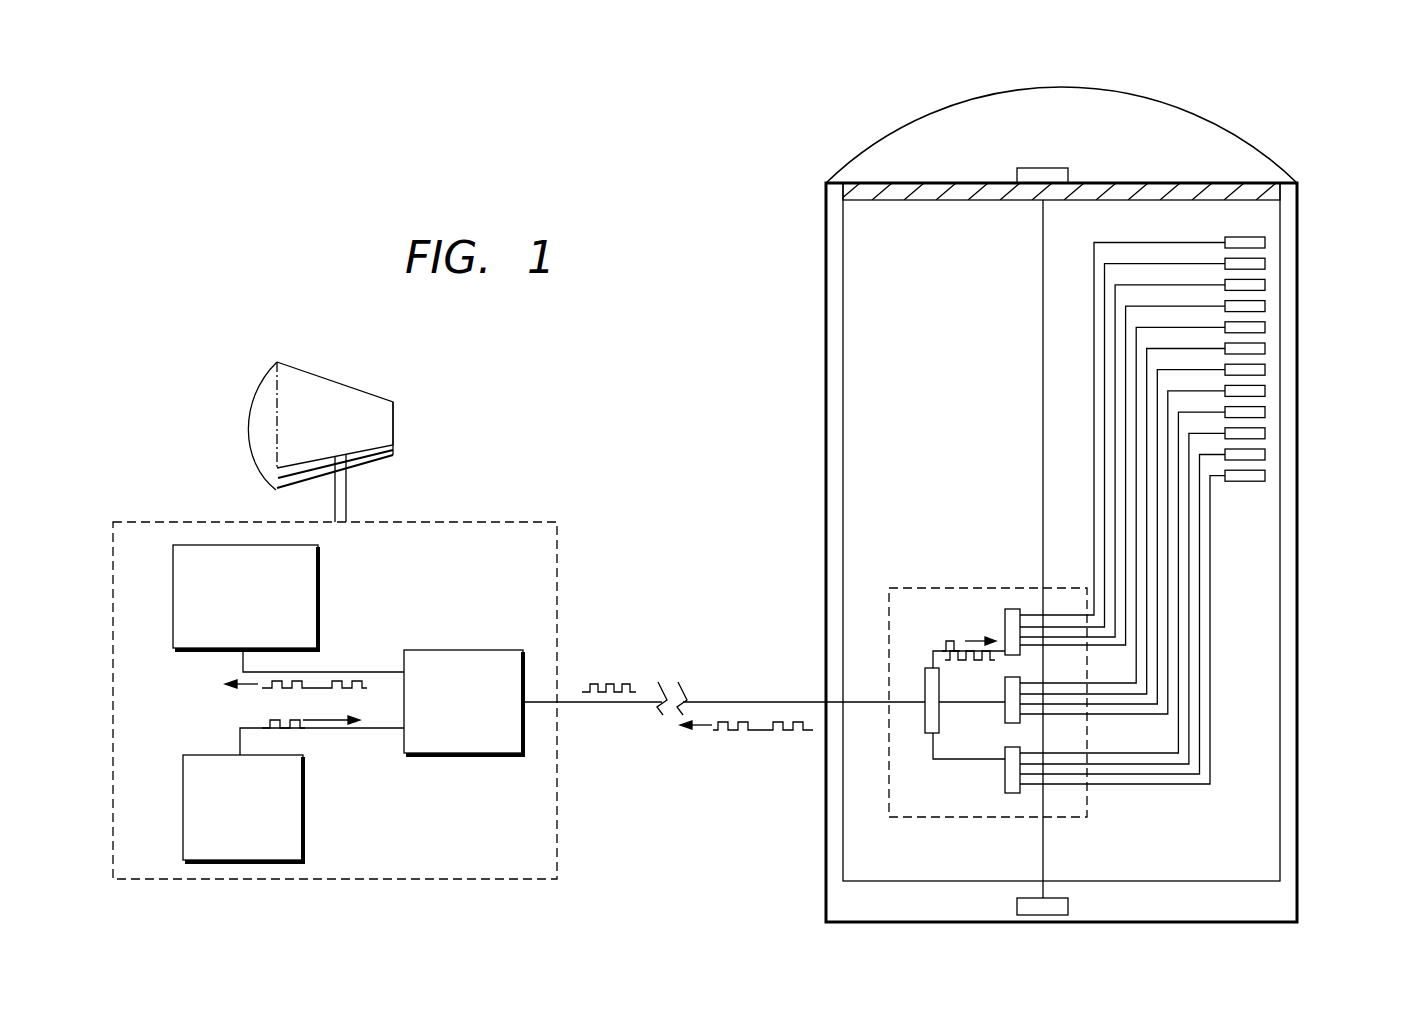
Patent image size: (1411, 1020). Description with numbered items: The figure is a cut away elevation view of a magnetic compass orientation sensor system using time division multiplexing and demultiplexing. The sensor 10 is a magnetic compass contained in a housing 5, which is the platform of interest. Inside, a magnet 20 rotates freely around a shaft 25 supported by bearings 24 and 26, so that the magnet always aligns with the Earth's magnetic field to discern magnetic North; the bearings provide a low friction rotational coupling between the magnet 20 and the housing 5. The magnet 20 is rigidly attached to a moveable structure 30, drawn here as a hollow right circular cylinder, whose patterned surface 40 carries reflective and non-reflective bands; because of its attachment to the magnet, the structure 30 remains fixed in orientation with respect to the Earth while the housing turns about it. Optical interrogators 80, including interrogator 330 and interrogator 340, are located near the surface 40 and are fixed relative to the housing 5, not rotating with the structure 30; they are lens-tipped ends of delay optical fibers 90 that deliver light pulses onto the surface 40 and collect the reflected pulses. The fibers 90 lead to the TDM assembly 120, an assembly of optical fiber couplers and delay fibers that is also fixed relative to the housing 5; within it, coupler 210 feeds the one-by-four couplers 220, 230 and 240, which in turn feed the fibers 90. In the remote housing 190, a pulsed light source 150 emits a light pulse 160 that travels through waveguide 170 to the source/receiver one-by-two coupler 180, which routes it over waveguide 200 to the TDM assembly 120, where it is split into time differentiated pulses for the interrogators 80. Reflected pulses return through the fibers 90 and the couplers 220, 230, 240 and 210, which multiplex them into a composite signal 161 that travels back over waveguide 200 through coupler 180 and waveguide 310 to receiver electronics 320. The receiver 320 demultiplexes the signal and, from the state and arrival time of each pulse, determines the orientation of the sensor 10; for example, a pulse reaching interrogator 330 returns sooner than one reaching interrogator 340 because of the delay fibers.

The housing 5 is at (820, 372).
The sensor 10 is at (1148, 97).
The magnet 20 is at (1200, 182).
The bearing 24 is at (1033, 167).
The shaft 25 is at (1043, 310).
The bearing 26 is at (1068, 907).
The moveable structure 30 is at (1280, 750).
The patterned surface 40 is at (1275, 524).
The optical interrogators 80 is at (1313, 337).
The delay optical fibers 90 is at (1143, 737).
The TDM assembly 120 is at (1013, 580).
The source 150 is at (303, 778).
The light pulse 160 is at (262, 720).
The composite signal 161 is at (325, 686).
The waveguide 170 is at (355, 730).
The source/receiver 1×2 coupler 180 is at (458, 650).
The housing 190 is at (561, 853).
The waveguide 200 is at (713, 700).
The coupler 210 is at (925, 680).
The 1×4 coupler 220 is at (1004, 625).
The 1×4 coupler 230 is at (1004, 712).
The 1×4 coupler 240 is at (1004, 777).
The waveguide 310 is at (382, 668).
The receiver electronics 320 is at (318, 603).
The interrogator 330 is at (1243, 239).
The interrogator 340 is at (1250, 433).